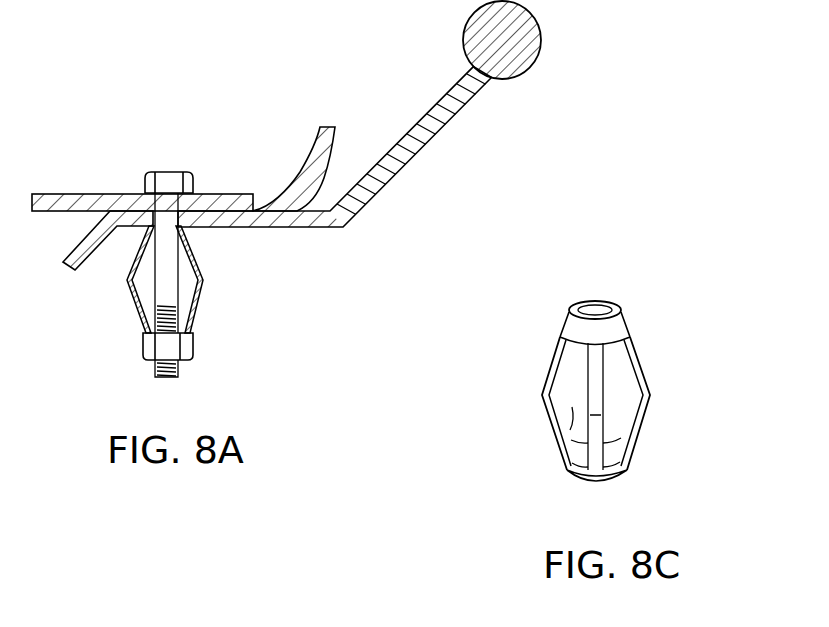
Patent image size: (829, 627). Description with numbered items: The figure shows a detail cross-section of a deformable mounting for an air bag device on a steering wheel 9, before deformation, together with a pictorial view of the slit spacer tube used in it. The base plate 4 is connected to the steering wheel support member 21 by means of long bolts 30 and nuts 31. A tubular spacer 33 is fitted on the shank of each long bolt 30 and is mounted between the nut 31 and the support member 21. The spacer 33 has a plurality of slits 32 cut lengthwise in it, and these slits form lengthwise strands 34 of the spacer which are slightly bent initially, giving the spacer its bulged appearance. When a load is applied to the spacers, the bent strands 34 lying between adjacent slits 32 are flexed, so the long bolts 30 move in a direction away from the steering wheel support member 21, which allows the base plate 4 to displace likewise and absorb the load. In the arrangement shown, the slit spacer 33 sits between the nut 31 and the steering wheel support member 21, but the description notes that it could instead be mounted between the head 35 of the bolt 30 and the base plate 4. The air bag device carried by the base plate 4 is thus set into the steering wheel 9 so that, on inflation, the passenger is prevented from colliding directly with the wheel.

In FIG. 8A, the base plate 4 is at (74, 200).
In FIG. 8A, the steering wheel 9 is at (535, 38).
In FIG. 8A, the steering wheel support member 21 is at (390, 163).
In FIG. 8A, the long bolt 30 is at (168, 291).
In FIG. 8A, the nut 31 is at (160, 343).
In FIG. 8C, the slits 32 is at (572, 408).
In FIG. 8A, the tubular spacer 33 is at (197, 297).
In FIG. 8C, the tubular spacer 33 is at (645, 328).
In FIG. 8C, the strands 34 is at (548, 393).
In FIG. 8A, the head 35 is at (172, 188).